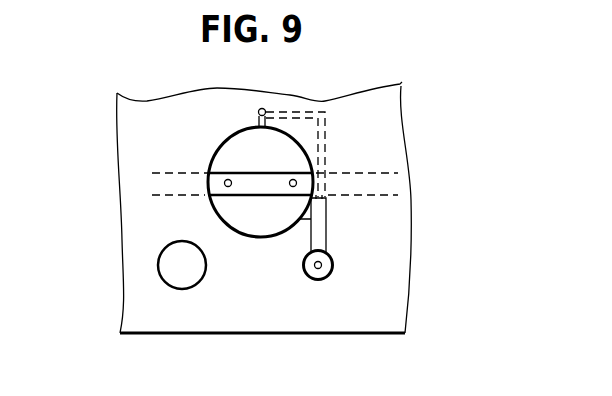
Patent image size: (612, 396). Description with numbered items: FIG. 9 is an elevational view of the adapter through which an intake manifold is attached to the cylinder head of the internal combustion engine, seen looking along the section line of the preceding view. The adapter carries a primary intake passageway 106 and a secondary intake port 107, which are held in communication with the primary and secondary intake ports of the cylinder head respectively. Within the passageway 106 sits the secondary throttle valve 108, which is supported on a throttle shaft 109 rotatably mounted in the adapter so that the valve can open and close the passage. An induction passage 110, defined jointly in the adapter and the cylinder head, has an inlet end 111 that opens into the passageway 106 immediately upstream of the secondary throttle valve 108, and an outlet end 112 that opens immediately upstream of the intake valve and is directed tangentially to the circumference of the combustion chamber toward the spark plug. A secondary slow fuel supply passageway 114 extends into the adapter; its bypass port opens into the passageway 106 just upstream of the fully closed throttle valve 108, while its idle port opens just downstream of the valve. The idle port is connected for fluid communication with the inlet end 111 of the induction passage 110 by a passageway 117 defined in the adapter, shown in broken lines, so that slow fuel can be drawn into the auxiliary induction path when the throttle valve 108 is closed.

The primary intake passageway 106 is at (223, 326).
The secondary intake port 107 is at (173, 268).
The secondary throttle valve 108 is at (233, 158).
The throttle shaft 109 is at (205, 177).
The induction passage 110 is at (332, 267).
The inlet end 111 is at (311, 207).
The outlet end 112 is at (319, 270).
The secondary slow fuel supply passageway 114 is at (263, 109).
The passageway 117 is at (323, 150).